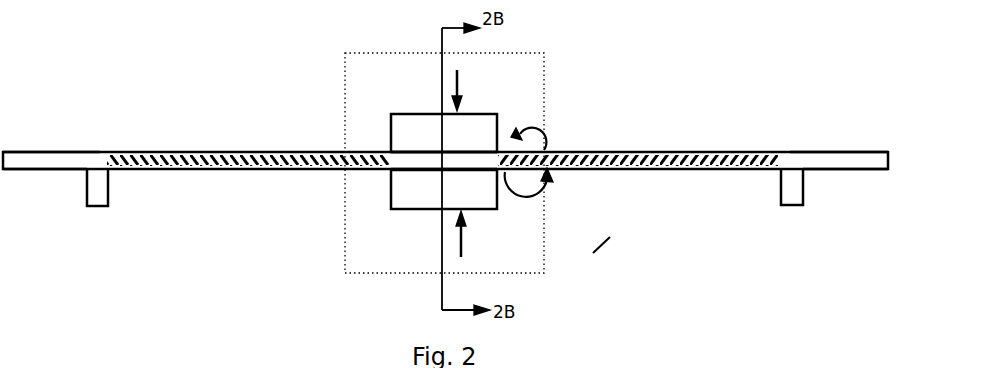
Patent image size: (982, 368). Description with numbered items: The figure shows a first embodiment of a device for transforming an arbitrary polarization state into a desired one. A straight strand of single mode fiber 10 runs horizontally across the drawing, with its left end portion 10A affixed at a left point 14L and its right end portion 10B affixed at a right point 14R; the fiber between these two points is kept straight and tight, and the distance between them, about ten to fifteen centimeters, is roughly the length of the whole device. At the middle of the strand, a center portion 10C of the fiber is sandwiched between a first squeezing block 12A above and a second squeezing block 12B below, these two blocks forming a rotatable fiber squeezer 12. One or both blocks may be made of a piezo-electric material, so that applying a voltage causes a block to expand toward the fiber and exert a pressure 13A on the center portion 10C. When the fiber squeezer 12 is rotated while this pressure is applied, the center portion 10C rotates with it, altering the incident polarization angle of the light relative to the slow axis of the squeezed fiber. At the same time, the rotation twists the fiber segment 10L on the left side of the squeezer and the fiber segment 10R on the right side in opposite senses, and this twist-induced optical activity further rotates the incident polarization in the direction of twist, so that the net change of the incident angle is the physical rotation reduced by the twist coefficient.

The single mode fiber 10 is at (853, 172).
The left end portion 10A is at (91, 152).
The right end portion 10B is at (797, 151).
The center portion 10C is at (391, 172).
The segment 10L is at (222, 172).
The segment 10R is at (648, 171).
The rotatable fiber squeezer 12 is at (553, 93).
The first squeezing block 12A is at (463, 128).
The second squeezing block 12B is at (488, 197).
The pressure 13A is at (450, 83).
The left point 14L is at (110, 173).
The right point 14R is at (781, 173).